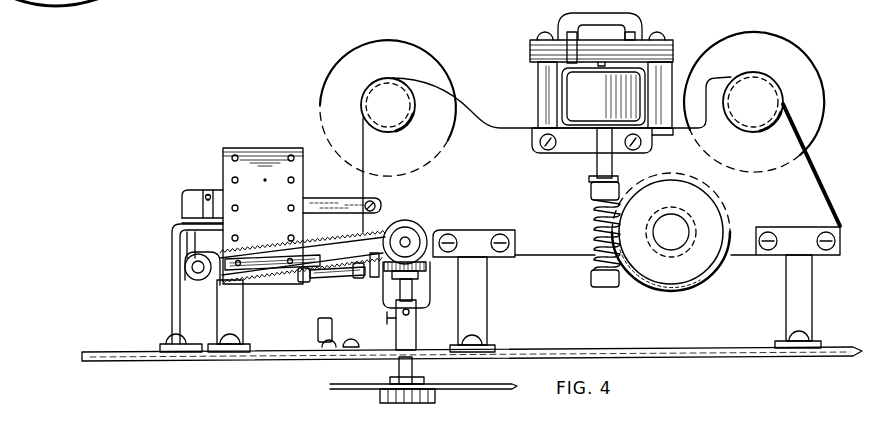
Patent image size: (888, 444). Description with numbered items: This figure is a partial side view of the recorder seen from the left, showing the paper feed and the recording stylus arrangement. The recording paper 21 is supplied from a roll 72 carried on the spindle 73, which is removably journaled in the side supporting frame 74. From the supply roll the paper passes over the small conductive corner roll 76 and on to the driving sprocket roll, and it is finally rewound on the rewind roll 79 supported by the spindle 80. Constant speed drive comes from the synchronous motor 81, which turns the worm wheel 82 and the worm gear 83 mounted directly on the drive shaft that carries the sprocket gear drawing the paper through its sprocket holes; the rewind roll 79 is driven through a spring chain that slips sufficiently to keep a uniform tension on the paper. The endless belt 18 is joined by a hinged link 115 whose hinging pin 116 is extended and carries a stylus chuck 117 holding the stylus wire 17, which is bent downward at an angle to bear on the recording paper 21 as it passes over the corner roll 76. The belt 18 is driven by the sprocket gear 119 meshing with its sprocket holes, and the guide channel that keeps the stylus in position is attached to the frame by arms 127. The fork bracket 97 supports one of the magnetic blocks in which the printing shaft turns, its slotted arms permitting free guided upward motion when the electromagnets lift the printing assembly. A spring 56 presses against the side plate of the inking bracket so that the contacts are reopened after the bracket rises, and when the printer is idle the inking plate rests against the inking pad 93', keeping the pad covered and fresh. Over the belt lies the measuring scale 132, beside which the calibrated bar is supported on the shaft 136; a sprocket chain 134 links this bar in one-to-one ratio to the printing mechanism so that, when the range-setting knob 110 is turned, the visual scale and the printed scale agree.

The stylus wire 17 is at (378, 262).
The endless belt 18 is at (262, 147).
The recording paper 21 is at (365, 210).
The spring 56 is at (375, 334).
The roll 72 is at (440, 62).
The spindle 73 is at (372, 90).
The side supporting frame 74 is at (808, 182).
The corner roll 76 is at (385, 220).
The rewind roll 79 is at (820, 77).
The spindle 80 is at (762, 88).
The synchronous motor 81 is at (635, 17).
The worm wheel 82 is at (594, 220).
The worm gear 83 is at (708, 272).
The inking pad 93' is at (307, 336).
The fork bracket 97 is at (420, 305).
The range-setting knob 110 is at (400, 408).
The hinged link 115 is at (265, 280).
The hinging pin 116 is at (335, 276).
The stylus chuck 117 is at (356, 278).
The sprocket gear 119 is at (238, 148).
The arm 127 is at (327, 198).
The measuring scale 132 is at (237, 328).
The sprocket chain 134 is at (300, 280).
The shaft 136 is at (195, 268).